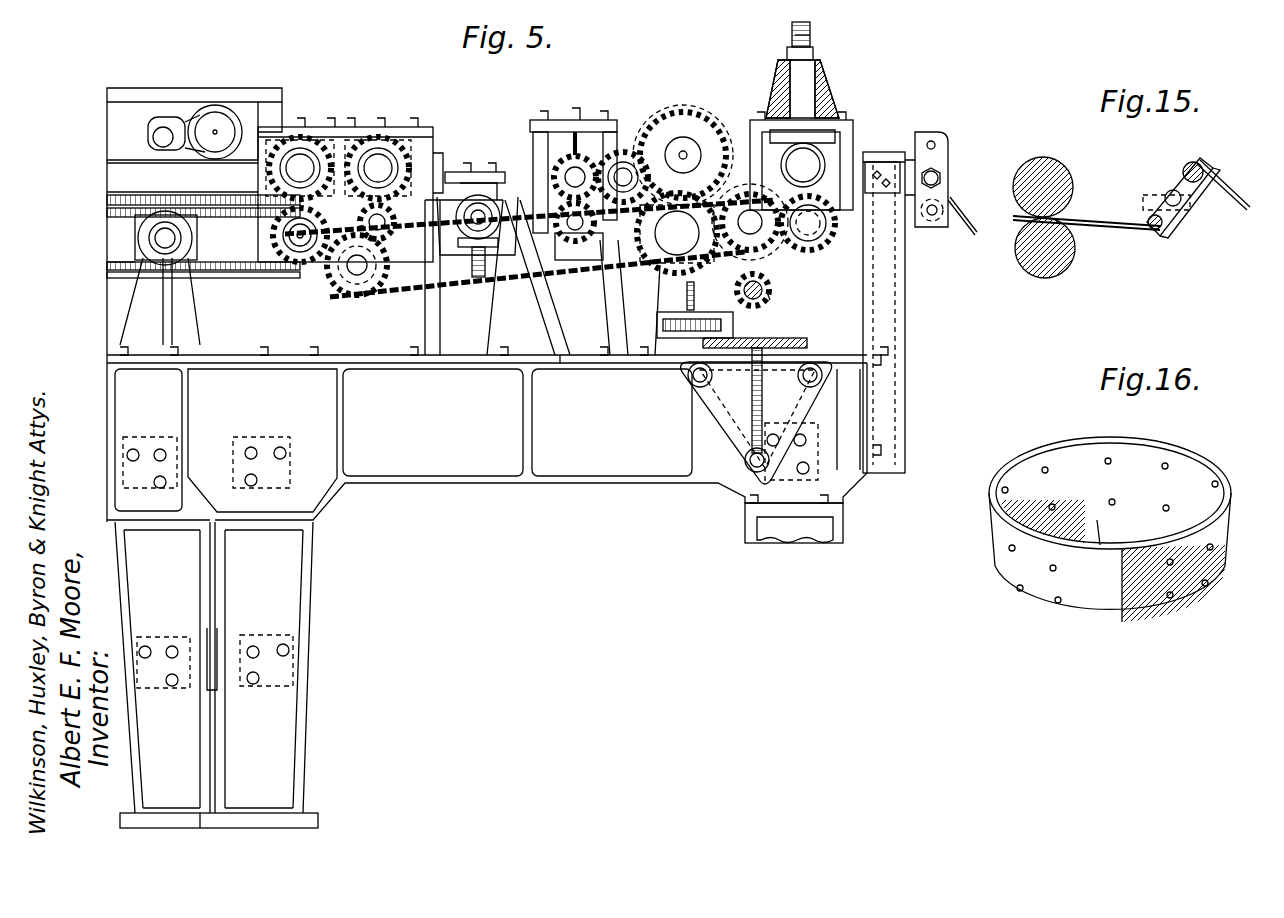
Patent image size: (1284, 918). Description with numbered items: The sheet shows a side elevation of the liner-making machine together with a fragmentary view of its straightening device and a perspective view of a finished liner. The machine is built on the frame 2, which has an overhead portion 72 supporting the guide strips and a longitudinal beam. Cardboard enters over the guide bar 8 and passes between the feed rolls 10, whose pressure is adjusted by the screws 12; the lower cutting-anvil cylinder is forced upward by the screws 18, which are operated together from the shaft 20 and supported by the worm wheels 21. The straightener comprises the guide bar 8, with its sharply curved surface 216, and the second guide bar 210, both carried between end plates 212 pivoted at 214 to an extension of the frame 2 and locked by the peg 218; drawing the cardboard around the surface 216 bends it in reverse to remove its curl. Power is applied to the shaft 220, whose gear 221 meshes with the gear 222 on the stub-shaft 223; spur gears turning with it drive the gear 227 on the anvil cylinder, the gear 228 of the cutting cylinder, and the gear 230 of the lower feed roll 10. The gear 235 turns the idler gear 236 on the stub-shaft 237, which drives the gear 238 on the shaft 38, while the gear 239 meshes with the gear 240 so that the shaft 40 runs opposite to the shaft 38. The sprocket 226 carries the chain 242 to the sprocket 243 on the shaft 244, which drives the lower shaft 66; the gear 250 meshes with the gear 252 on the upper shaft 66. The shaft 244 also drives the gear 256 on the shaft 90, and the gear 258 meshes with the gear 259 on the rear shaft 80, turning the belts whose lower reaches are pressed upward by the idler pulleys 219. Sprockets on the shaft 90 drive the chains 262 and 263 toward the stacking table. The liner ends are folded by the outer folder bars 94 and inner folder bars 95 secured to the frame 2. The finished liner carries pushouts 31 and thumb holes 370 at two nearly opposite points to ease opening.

In FIG. 5, the frame 2 is at (600, 460).
In FIG. 5, the guide bar 8 is at (962, 231).
In FIG. 15, the guide bar 8 is at (1205, 185).
In FIG. 5, the feed rolls 10 is at (833, 97).
In FIG. 15, the feed rolls 10 is at (1073, 183).
In FIG. 5, the screws 12 is at (811, 37).
In FIG. 5, the screws 18 is at (694, 292).
In FIG. 5, the shaft 20 is at (735, 350).
In FIG. 5, the worm wheels 21 is at (690, 348).
In FIG. 16, the pushouts 31 is at (1165, 468).
In FIG. 5, the shaft 38 is at (698, 150).
In FIG. 5, the shaft 40 is at (660, 270).
In FIG. 5, the shafts 66 is at (432, 158).
In FIG. 5, the overhead portion of the frame 72 is at (270, 125).
In FIG. 5, the rear shaft 80 is at (302, 165).
In FIG. 5, the shaft 90 is at (293, 268).
In FIG. 5, the outer folder bars 94 is at (110, 195).
In FIG. 5, the inner folder bars 95 is at (118, 218).
In FIG. 5, the guide bar 210 is at (935, 145).
In FIG. 15, the guide bar 210 is at (1160, 240).
In FIG. 5, the end plates 212 is at (940, 155).
In FIG. 15, the end plates 212 is at (1180, 212).
In FIG. 5, the pivots 214 is at (940, 178).
In FIG. 5, the sharply curved surface 216 is at (932, 222).
In FIG. 15, the sharply curved surface 216 is at (1203, 160).
In FIG. 5, the peg 218 is at (918, 167).
In FIG. 5, the idler pulleys 219 is at (197, 250).
In FIG. 5, the shaft 220 is at (772, 290).
In FIG. 5, the gear 221 is at (762, 300).
In FIG. 5, the gear 222 is at (788, 243).
In FIG. 5, the stub-shaft 223 is at (750, 217).
In FIG. 5, the sprocket 226 is at (677, 233).
In FIG. 5, the gear 227 is at (680, 340).
In FIG. 5, the gear 228 is at (703, 112).
In FIG. 5, the gear 230 is at (893, 275).
In FIG. 5, the gear 235 is at (688, 128).
In FIG. 5, the idler gear 236 is at (613, 165).
In FIG. 5, the stub-shaft 237 is at (622, 172).
In FIG. 5, the gear 238 is at (590, 160).
In FIG. 5, the gear 239 is at (566, 157).
In FIG. 5, the gear 240 is at (598, 285).
In FIG. 5, the chain 242 is at (530, 280).
In FIG. 5, the sprocket 243 is at (348, 300).
In FIG. 5, the shaft 244 is at (395, 290).
In FIG. 5, the gear 250 is at (432, 290).
In FIG. 5, the gear 252 is at (380, 165).
In FIG. 5, the gear 256 is at (273, 235).
In FIG. 5, the gear 258 is at (278, 213).
In FIG. 5, the gear 259 is at (266, 168).
In FIG. 5, the chain 262 is at (110, 268).
In FIG. 5, the chain 263 is at (207, 280).
In FIG. 16, the thumb holes 370 is at (1105, 520).